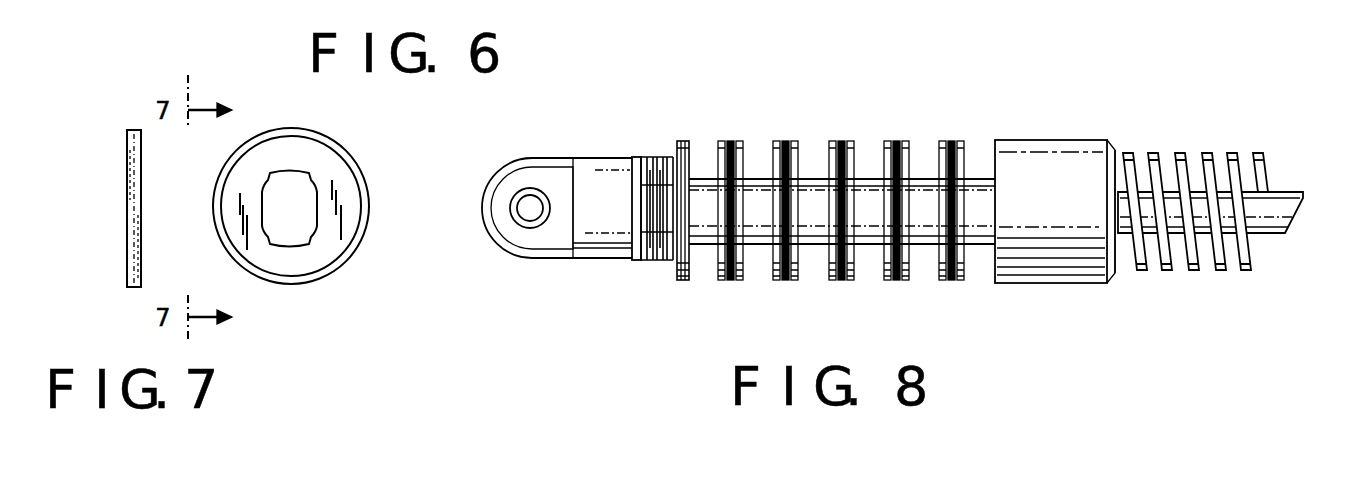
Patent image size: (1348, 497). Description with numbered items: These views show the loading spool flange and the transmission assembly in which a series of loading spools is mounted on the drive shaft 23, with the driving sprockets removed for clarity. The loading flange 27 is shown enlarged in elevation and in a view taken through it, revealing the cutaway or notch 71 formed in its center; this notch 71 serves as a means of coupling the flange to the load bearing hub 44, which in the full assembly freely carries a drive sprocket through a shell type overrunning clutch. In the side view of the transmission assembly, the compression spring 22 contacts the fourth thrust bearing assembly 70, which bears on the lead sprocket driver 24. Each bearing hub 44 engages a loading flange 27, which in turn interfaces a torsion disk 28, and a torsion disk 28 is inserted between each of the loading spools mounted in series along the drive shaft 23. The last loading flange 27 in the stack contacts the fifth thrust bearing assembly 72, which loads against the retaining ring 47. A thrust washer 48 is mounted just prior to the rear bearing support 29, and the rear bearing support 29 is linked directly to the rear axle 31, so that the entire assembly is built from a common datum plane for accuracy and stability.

In FIG. 8, the compression spring 22 is at (1200, 153).
In FIG. 8, the drive shaft 23 is at (1273, 205).
In FIG. 8, the lead sprocket driver 24 is at (1068, 140).
In FIG. 6, the loading flange 27 is at (127, 155).
In FIG. 7, the loading flange 27 is at (327, 248).
In FIG. 8, the loading flange 27 is at (683, 282).
In FIG. 8, the torsion disk 28 is at (731, 140).
In FIG. 8, the rear bearing support 29 is at (590, 250).
In FIG. 8, the rear axle 31 is at (533, 200).
In FIG. 8, the bearing hub 44 is at (706, 178).
In FIG. 8, the retaining ring 47 is at (633, 166).
In FIG. 8, the thrust washer 48 is at (645, 262).
In FIG. 8, the fourth thrust bearing assembly 70 is at (1119, 153).
In FIG. 7, the notch 71 is at (315, 187).
In FIG. 8, the fifth thrust bearing assembly 72 is at (661, 160).